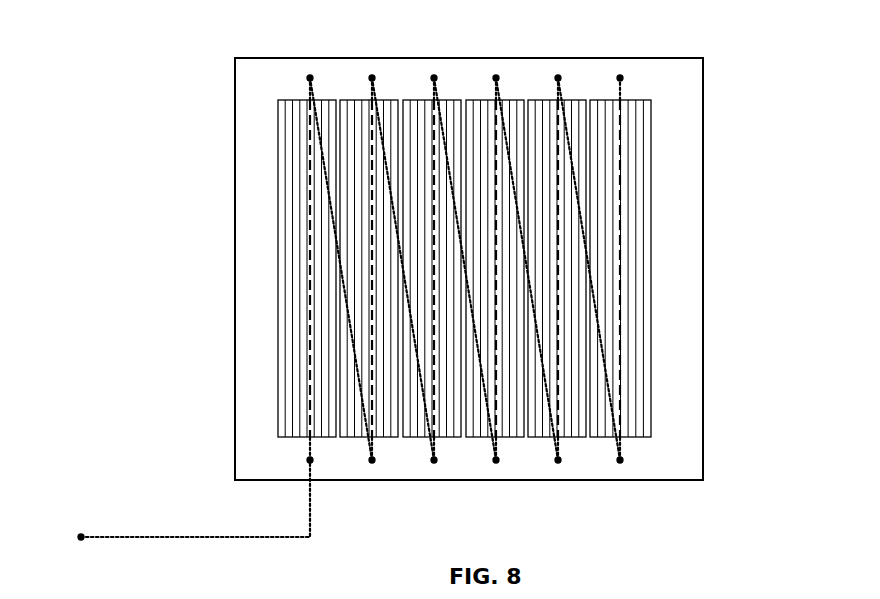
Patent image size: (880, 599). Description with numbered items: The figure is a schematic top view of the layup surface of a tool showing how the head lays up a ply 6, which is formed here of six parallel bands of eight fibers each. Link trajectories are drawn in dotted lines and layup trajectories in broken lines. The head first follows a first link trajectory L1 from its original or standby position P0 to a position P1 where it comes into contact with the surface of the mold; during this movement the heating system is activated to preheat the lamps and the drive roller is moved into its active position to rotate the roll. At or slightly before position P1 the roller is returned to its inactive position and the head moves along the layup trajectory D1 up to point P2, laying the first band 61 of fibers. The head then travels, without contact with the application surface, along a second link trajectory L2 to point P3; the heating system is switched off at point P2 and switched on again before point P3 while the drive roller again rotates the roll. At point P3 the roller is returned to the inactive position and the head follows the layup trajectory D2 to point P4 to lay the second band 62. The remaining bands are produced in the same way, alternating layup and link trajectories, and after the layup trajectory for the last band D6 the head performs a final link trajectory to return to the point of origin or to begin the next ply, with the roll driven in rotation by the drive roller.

The ply 6 is at (651, 240).
The first band of fibers 61 is at (280, 208).
The second band of fibers 62 is at (389, 100).
The layup trajectory D1 is at (310, 256).
The layup trajectory D2 is at (370, 400).
The layup trajectory for the last band D6 is at (620, 142).
The first link trajectory L1 is at (191, 537).
The second link trajectory L2 is at (350, 333).
The original position P0 is at (69, 524).
The position P1 is at (291, 467).
The point P2 is at (291, 81).
The point P3 is at (358, 467).
The point P4 is at (356, 81).